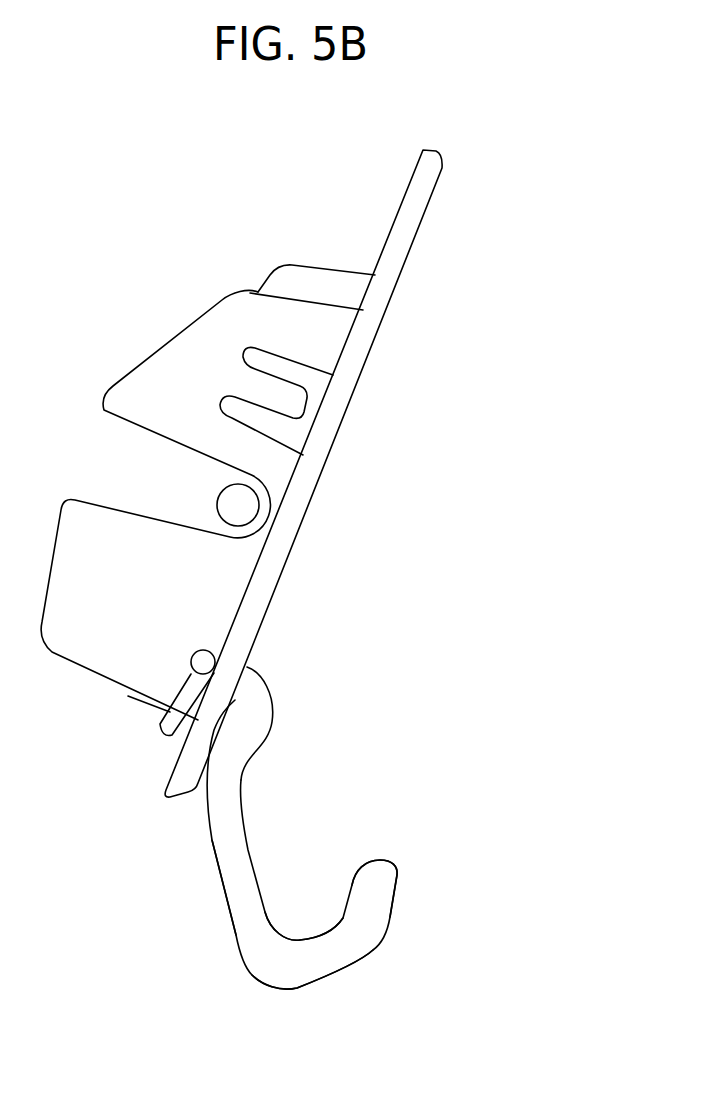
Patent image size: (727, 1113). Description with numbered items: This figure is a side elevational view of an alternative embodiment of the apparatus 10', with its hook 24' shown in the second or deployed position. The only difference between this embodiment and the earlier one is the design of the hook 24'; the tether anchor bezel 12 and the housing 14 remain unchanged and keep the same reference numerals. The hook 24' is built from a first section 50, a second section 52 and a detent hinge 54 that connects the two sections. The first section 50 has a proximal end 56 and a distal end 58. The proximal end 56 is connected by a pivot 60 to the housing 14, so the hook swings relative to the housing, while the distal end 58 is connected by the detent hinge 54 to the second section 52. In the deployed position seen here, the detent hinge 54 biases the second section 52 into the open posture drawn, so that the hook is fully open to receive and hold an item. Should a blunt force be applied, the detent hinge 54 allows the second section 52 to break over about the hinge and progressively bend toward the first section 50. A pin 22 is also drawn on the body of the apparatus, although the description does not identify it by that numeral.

The apparatus 10' is at (341, 550).
The tether anchor bezel 12 is at (477, 357).
The housing 14 is at (417, 238).
The pivot pin 22 is at (227, 505).
The hook 24' is at (337, 844).
The first section 50 is at (223, 877).
The second section 52 is at (372, 948).
The detent hinge 54 is at (252, 970).
The proximal end 56 is at (263, 683).
The distal end 58 is at (268, 918).
The pivot 60 is at (158, 718).